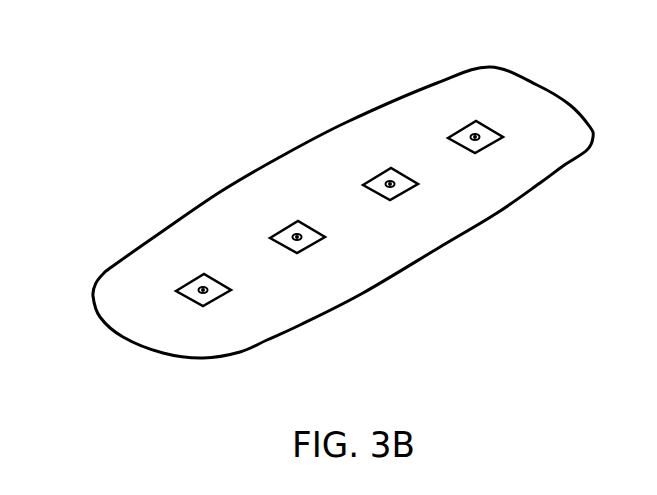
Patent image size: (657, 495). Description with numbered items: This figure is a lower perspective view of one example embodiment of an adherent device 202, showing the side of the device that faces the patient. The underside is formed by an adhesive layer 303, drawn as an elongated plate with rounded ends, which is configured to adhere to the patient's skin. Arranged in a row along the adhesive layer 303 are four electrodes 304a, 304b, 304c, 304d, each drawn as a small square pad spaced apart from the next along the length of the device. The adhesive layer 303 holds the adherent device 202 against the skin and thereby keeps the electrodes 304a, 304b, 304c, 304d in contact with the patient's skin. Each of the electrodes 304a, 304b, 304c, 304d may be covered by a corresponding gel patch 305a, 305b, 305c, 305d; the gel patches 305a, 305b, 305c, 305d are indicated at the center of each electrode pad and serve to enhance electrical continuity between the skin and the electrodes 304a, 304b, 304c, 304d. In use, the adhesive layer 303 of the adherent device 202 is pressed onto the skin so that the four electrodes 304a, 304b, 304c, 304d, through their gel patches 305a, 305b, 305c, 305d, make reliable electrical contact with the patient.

The adherent device 202 is at (206, 62).
The adhesive layer 303 is at (130, 280).
The electrode 304a is at (203, 288).
The electrode 304b is at (297, 235).
The electrode 304c is at (390, 184).
The electrode 304d is at (475, 137).
The gel patch 305a is at (203, 290).
The gel patch 305b is at (297, 237).
The gel patch 305c is at (390, 184).
The gel patch 305d is at (475, 137).